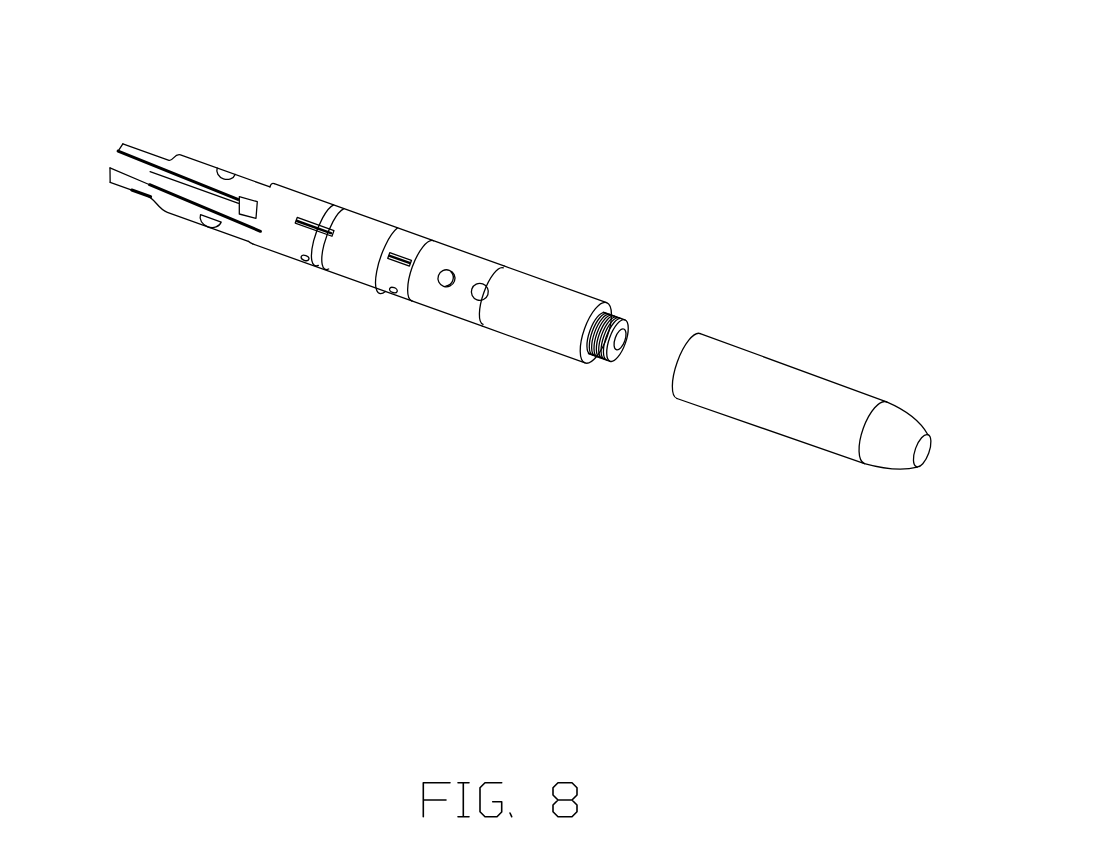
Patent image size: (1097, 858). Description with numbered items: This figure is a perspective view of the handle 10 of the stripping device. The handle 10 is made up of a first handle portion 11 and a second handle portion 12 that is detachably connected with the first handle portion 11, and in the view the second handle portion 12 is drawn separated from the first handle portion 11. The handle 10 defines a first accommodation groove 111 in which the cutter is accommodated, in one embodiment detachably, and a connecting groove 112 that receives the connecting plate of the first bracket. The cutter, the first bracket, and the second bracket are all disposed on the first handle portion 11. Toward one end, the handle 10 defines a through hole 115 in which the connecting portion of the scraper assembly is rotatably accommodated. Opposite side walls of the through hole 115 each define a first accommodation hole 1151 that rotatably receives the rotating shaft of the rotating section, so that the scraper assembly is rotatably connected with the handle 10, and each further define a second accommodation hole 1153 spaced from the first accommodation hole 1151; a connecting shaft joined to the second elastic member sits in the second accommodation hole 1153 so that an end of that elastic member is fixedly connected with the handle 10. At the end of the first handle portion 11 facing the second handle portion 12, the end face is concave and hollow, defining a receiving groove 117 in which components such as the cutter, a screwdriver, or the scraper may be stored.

The handle 10 is at (502, 254).
The first handle portion 11 is at (558, 292).
The first accommodation groove 111 is at (373, 230).
The connecting groove 112 is at (472, 263).
The through hole 115 is at (131, 153).
The first accommodation hole 1151 is at (155, 168).
The second accommodation hole 1153 is at (239, 203).
The receiving groove 117 is at (631, 328).
The second handle portion 12 is at (797, 400).